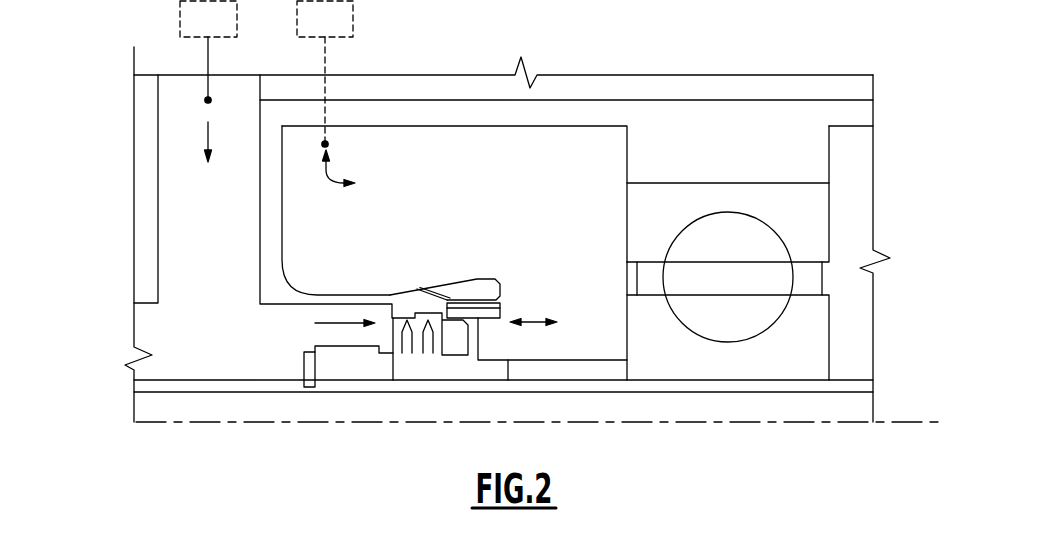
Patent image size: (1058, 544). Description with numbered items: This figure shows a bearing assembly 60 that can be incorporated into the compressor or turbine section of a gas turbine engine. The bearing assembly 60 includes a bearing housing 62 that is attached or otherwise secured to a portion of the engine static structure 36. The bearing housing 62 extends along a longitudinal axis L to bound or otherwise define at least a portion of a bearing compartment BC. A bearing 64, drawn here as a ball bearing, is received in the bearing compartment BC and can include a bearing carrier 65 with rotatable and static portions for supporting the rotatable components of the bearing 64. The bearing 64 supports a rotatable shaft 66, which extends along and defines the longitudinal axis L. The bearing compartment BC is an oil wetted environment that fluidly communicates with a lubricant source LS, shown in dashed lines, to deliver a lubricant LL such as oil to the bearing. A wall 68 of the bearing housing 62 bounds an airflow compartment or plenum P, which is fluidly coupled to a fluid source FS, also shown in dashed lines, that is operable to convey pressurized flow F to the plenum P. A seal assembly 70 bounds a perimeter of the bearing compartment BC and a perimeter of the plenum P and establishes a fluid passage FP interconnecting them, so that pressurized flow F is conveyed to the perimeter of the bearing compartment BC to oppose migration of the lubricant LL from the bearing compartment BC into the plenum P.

The bearing assembly 60 is at (92, 68).
The engine static structure 36 is at (653, 88).
The bearing housing 62 is at (410, 112).
The bearing 64 is at (806, 175).
The bearing carrier 65 is at (829, 228).
The shaft 66 is at (845, 385).
The wall 68 is at (259, 181).
The seal assembly 70 is at (522, 286).
The fluid source FS is at (195, 30).
The lubricant source LS is at (311, 30).
The bearing compartment BC is at (428, 208).
The plenum P is at (202, 254).
The fluid passage FP is at (466, 349).
The longitudinal axis L is at (923, 420).
The pressurized flow F is at (208, 140).
The lubricant LL is at (336, 176).